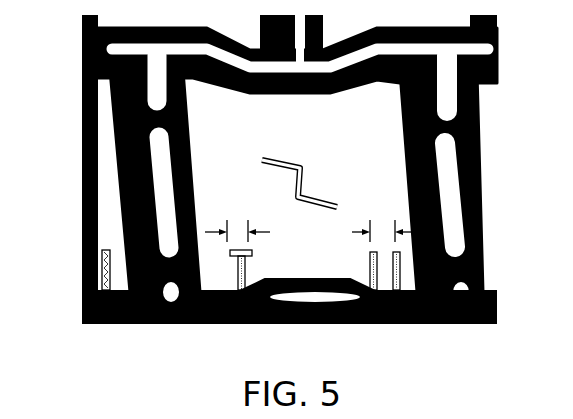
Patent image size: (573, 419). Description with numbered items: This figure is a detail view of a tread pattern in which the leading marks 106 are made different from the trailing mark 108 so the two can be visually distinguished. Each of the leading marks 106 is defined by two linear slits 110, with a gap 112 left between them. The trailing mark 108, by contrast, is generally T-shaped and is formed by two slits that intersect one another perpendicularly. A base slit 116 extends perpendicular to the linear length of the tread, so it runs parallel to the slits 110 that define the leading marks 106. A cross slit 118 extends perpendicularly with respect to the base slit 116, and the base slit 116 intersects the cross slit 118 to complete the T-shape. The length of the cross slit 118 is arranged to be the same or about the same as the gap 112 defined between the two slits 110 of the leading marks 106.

The leading marks 106 is at (402, 265).
The trailing mark 108 is at (264, 266).
The linear slits 110 is at (390, 268).
The gap 112 is at (236, 232).
The base slit 116 is at (230, 256).
The cross slit 118 is at (167, 323).